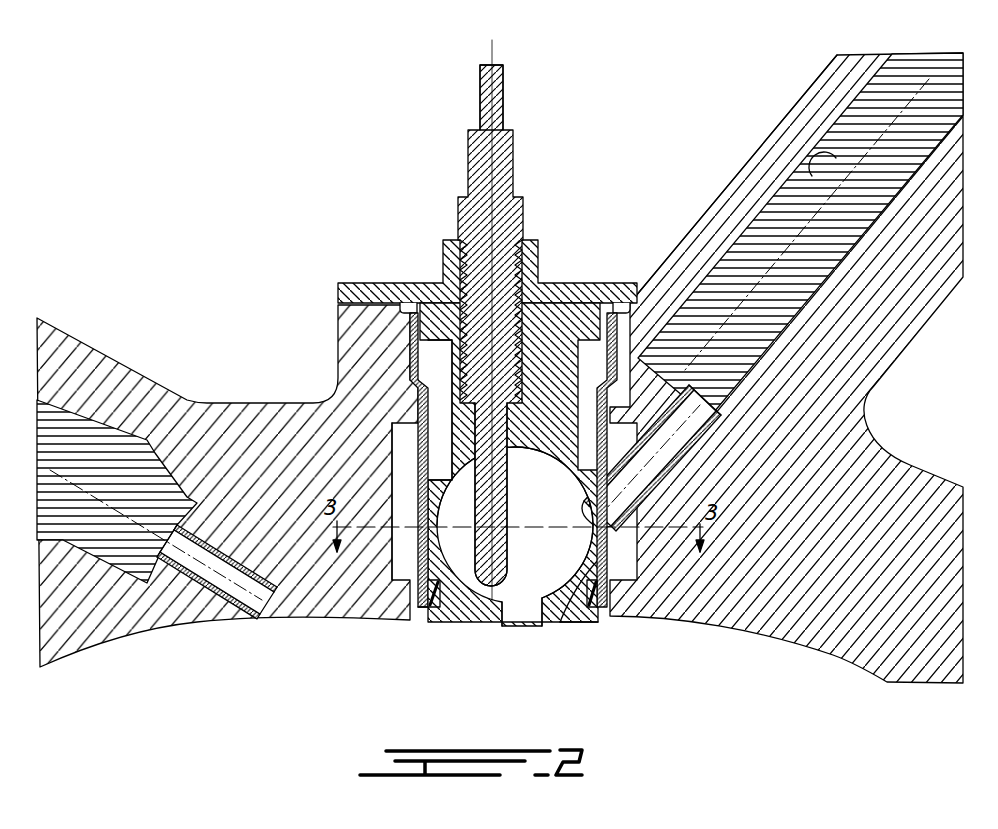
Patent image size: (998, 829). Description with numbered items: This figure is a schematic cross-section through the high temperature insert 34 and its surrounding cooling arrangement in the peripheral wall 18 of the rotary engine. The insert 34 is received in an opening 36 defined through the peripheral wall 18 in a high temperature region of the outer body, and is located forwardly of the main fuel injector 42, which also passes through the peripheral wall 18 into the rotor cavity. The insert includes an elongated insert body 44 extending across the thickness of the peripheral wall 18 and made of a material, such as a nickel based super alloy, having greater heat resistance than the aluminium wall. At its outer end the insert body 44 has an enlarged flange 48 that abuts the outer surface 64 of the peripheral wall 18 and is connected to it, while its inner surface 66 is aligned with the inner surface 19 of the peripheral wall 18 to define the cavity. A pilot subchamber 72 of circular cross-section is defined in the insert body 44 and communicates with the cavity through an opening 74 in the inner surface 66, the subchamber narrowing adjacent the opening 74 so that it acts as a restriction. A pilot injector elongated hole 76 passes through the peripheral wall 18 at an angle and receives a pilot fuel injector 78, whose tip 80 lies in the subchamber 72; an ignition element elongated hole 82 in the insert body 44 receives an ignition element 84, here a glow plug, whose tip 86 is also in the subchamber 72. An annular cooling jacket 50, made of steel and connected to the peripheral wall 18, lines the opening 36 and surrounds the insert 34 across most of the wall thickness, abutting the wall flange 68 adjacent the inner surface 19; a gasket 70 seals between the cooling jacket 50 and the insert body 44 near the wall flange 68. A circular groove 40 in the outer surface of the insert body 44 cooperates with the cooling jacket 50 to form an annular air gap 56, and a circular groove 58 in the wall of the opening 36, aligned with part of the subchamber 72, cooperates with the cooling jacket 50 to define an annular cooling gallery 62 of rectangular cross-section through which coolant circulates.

The peripheral wall 18 is at (222, 440).
The inner surface 19 is at (777, 637).
The high temperature insert 34 is at (431, 283).
The opening 36 is at (590, 340).
The circular groove 40 is at (409, 364).
The main fuel injector 42 is at (104, 538).
The insert body 44 is at (545, 360).
The enlarged flange 48 is at (412, 302).
The annular cooling jacket 50 is at (448, 352).
The annular air gap 56 is at (588, 410).
The circular groove 58 is at (412, 565).
The annular cooling gallery 62 is at (398, 465).
The outer surface 64 is at (644, 296).
The inner surface 66 is at (577, 624).
The wall flange 68 is at (603, 618).
The gasket 70 is at (445, 624).
The pilot subchamber 72 is at (552, 558).
The opening 74 is at (525, 618).
The pilot injector elongated hole 76 is at (822, 190).
The pilot fuel injector 78 is at (747, 395).
The tip 80 is at (548, 594).
The ignition element elongated hole 82 is at (520, 253).
The ignition element 84 is at (507, 172).
The tip 86 is at (487, 590).